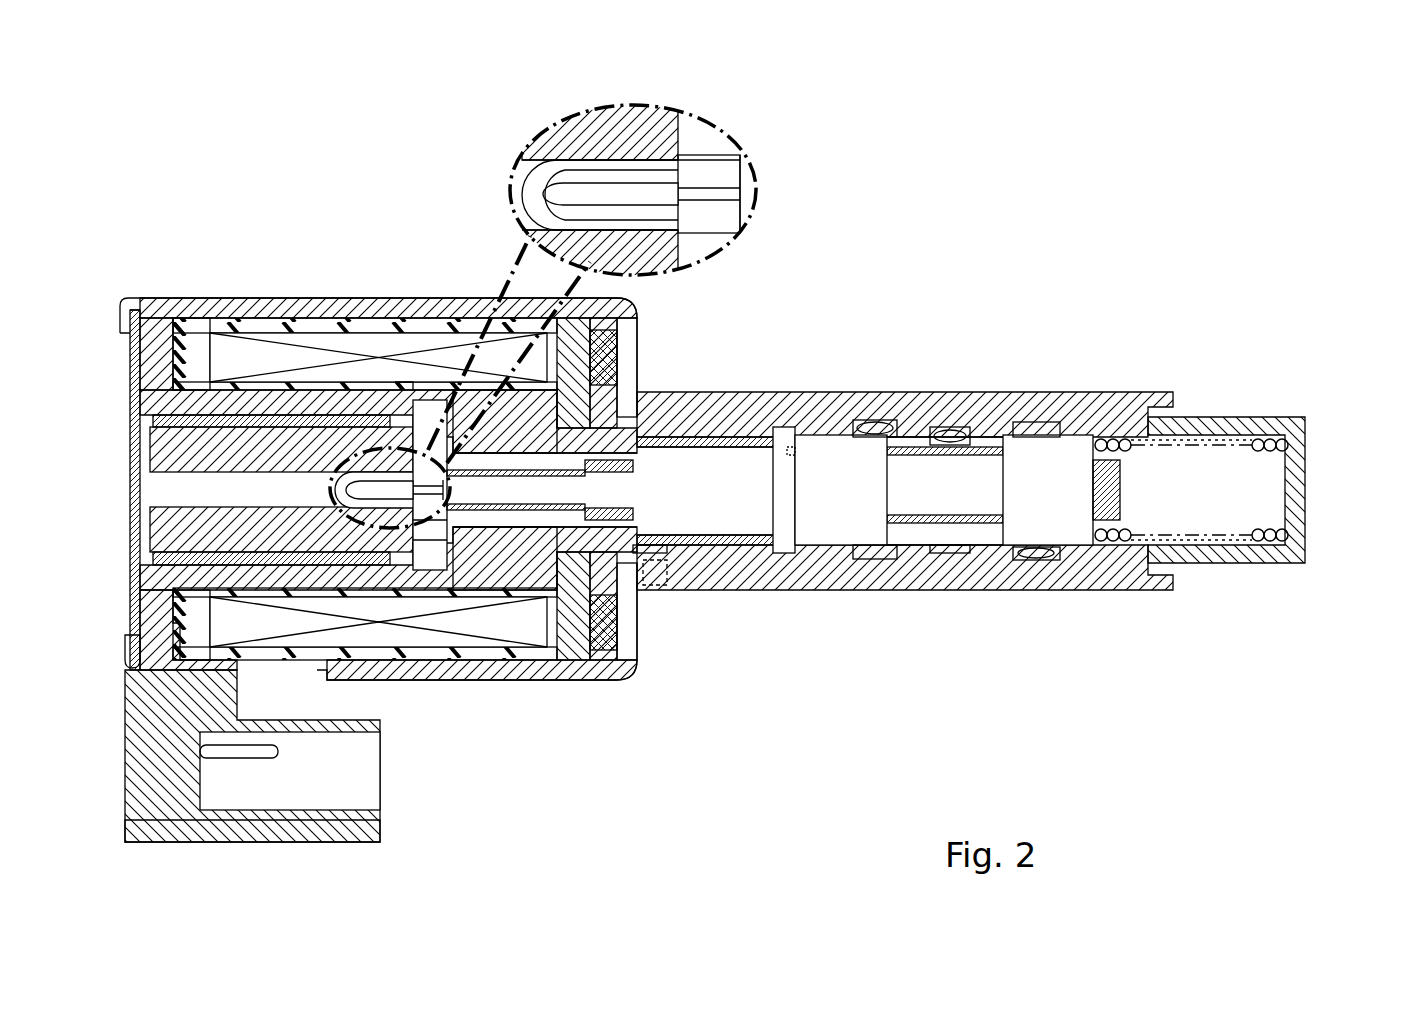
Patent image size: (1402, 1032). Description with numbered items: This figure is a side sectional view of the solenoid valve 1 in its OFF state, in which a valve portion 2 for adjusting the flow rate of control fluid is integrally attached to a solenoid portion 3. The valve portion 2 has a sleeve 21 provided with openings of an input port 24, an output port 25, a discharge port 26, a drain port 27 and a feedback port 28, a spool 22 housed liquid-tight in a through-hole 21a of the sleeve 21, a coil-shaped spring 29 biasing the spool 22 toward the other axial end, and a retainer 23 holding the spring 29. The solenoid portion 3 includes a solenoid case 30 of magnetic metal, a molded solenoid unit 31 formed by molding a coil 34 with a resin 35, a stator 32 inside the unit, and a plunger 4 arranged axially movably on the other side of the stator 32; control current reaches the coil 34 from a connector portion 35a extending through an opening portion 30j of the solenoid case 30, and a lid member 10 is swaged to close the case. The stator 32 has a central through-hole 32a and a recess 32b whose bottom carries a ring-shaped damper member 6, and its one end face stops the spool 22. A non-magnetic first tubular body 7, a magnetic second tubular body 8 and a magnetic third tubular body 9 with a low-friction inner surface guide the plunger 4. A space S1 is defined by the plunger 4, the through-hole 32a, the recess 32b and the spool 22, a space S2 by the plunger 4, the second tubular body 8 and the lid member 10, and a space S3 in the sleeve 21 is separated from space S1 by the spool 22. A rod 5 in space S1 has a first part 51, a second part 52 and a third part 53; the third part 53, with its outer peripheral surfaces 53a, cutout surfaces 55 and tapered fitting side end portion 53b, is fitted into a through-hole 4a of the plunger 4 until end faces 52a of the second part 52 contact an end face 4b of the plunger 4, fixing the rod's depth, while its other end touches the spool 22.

The solenoid valve 1 is at (709, 480).
The valve portion 2 is at (1014, 484).
The solenoid portion 3 is at (420, 480).
The plunger 4 is at (165, 450).
The through-hole 4a is at (165, 490).
The end face 4b is at (700, 155).
The rod 5 is at (570, 450).
The damper member 6 is at (410, 526).
The first tubular body 7 is at (422, 560).
The second tubular body 8 is at (135, 656).
The third tubular body 9 is at (130, 336).
The lid member 10 is at (150, 600).
The sleeve 21 is at (1085, 392).
The through-hole 21a is at (905, 525).
The spool 22 is at (830, 510).
The retainer 23 is at (1308, 480).
The input port 24 is at (875, 420).
The output port 25 is at (950, 400).
The discharge port 26 is at (1035, 560).
The drain port 27 is at (655, 590).
The feedback port 28 is at (790, 560).
The spring 29 is at (1265, 417).
The solenoid case 30 is at (512, 690).
The opening portion 30j is at (300, 752).
The molded solenoid unit 31 is at (290, 304).
The stator 32 is at (572, 600).
The through-hole 32a is at (605, 382).
The recess 32b is at (402, 382).
The coil 34 is at (245, 355).
The resin 35 is at (328, 560).
The connector portion 35a is at (305, 832).
The first part 51 is at (548, 505).
The second part 52 is at (565, 480).
The end faces 52a is at (668, 158).
The third part 53 is at (553, 401).
The outer peripheral surfaces 53a is at (600, 162).
The fitting side end portion 53b is at (535, 190).
The cutout surfaces 55 is at (732, 165).
The space S1 is at (430, 545).
The space S2 is at (165, 425).
The space S3 is at (960, 548).